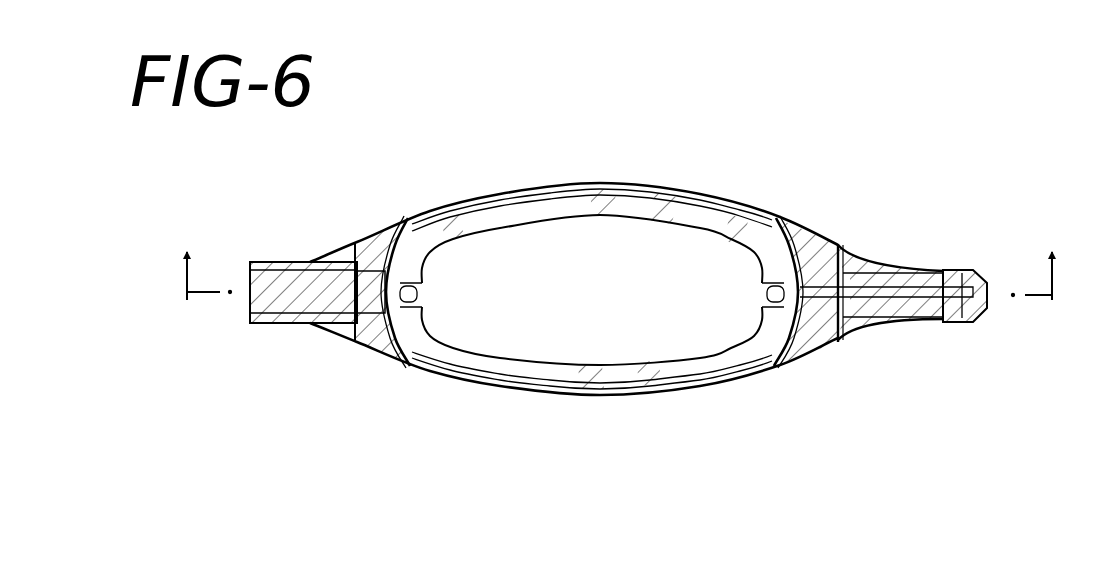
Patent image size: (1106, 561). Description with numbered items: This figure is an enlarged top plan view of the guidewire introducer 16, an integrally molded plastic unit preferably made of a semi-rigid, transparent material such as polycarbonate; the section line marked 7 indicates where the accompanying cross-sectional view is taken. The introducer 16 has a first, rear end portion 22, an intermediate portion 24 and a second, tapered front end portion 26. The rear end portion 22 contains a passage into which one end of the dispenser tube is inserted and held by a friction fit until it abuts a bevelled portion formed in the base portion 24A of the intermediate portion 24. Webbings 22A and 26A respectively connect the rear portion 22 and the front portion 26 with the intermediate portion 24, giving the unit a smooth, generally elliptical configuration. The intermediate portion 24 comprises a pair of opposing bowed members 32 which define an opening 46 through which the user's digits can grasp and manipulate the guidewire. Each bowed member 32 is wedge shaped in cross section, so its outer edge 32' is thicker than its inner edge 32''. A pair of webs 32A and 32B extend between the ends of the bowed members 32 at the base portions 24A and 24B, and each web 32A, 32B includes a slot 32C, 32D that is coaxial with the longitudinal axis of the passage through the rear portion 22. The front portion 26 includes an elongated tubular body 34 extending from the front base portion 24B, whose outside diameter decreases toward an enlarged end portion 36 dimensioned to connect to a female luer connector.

The guidewire introducer 16 is at (398, 468).
The section line 7- 7 is at (620, 281).
The rear end portion 22 is at (267, 232).
The webbing 22A is at (337, 246).
The intermediate portion 24 is at (588, 152).
The base portion 24A is at (386, 226).
The front base portion 24B is at (808, 242).
The front end portion 26 is at (925, 240).
The webbing 26A is at (865, 250).
The bowed member 32 is at (592, 292).
The outer edge 32' is at (592, 296).
The inner edge 32'' is at (592, 290).
The web 32A is at (440, 234).
The web 32B is at (753, 215).
The slot 32C is at (424, 298).
The slot 32D is at (760, 292).
The tubular body 34 is at (920, 323).
The enlarged end portion 36 is at (972, 268).
The opening 46 is at (660, 347).